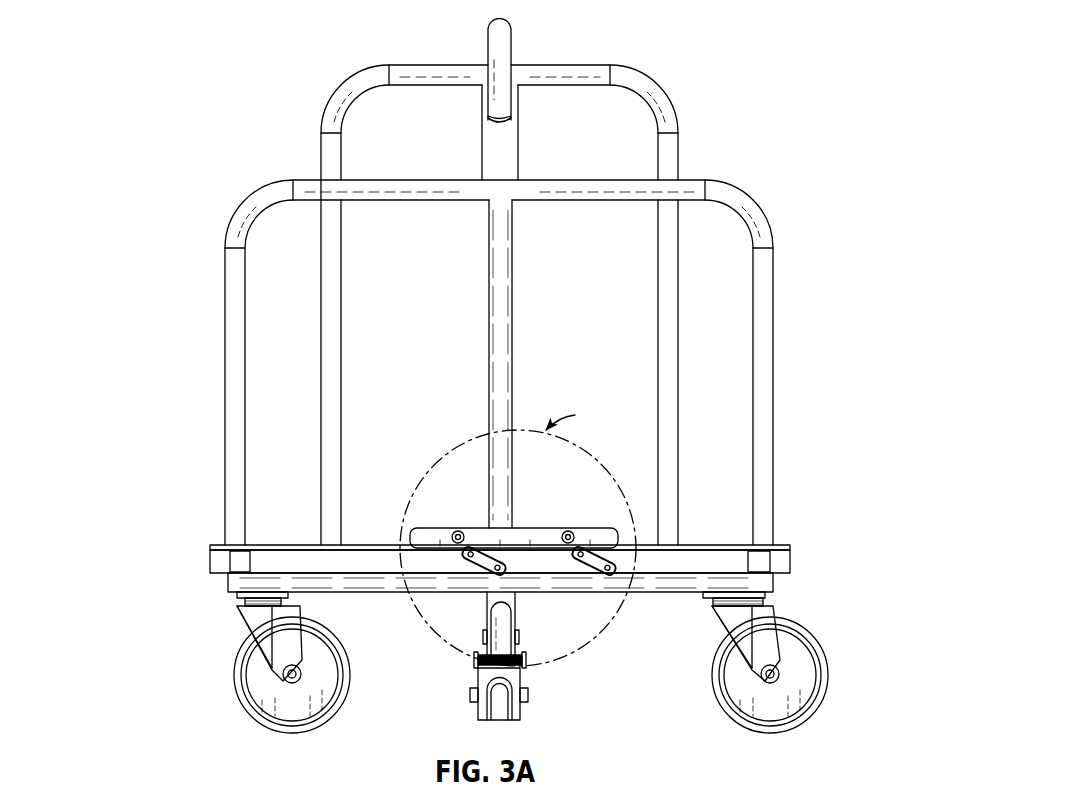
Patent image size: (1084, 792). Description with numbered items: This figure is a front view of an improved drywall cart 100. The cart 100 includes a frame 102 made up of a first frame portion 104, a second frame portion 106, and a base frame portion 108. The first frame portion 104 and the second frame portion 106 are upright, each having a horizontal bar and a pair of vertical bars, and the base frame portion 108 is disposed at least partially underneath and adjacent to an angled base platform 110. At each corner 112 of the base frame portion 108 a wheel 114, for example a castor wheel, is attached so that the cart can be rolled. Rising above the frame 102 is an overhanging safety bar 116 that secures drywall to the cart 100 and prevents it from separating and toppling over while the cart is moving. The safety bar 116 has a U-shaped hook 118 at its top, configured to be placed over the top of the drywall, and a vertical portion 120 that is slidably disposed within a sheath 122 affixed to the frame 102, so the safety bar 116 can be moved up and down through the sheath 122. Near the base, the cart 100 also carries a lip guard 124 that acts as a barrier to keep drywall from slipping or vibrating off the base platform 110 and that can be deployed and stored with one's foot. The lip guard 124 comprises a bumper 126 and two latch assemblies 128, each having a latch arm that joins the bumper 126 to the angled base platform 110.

The drywall cart 100 is at (172, 33).
The frame 102 is at (736, 128).
The first frame portion 104 is at (312, 88).
The second frame portion 106 is at (228, 185).
The base frame portion 108 is at (793, 560).
The angled base platform 110 is at (740, 545).
The corner 112 is at (215, 603).
The wheel 114 is at (236, 670).
The safety bar 116 is at (542, 38).
The U-shaped hook 118 is at (490, 33).
The vertical portion 120 is at (505, 290).
The sheath 122 is at (512, 148).
The lip guard 124 is at (529, 520).
The bumper 126 is at (478, 528).
The latch assembly 128 is at (465, 558).